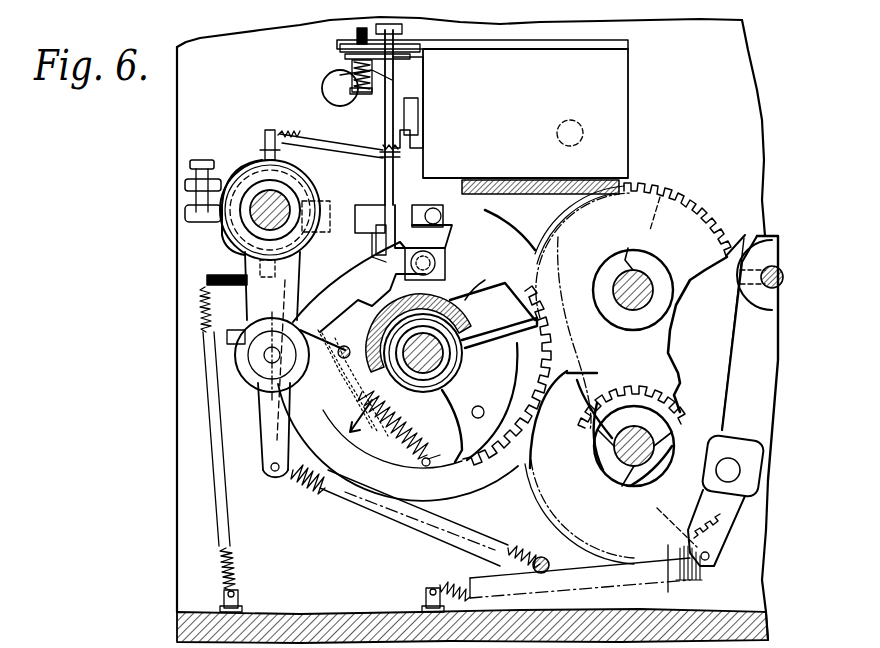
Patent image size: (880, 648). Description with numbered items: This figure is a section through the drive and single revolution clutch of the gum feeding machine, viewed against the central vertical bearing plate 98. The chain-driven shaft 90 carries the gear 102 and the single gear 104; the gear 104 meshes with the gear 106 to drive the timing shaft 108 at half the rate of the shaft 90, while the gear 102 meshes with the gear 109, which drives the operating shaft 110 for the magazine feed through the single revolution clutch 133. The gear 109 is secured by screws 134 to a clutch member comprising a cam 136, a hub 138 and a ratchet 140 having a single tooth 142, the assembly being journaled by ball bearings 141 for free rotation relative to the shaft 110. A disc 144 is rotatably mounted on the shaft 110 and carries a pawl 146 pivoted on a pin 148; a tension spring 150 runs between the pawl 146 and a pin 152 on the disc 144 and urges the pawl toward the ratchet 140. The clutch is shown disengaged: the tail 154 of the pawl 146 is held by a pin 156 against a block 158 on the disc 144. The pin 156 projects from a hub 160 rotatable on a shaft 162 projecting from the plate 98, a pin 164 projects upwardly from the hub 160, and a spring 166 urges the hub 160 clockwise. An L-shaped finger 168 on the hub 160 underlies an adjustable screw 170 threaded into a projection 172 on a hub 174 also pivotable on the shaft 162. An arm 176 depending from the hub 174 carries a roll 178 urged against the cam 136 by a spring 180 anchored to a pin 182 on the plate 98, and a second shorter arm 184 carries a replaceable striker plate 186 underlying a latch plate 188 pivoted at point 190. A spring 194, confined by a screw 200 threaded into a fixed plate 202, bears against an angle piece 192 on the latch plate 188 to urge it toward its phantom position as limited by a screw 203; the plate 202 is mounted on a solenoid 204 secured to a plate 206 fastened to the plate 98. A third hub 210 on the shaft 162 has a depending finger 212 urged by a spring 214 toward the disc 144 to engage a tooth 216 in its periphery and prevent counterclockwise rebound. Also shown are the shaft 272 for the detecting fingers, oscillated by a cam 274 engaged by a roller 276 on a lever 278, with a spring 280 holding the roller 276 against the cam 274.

The shaft 90 is at (625, 470).
The central vertical bearing plate 98 is at (362, 584).
The gear 102 is at (468, 490).
The single gear 104 is at (668, 418).
The gear 106 is at (668, 355).
The timing shaft 108 is at (625, 250).
The gear 109 is at (510, 335).
The operating shaft 110 is at (420, 375).
The single revolution clutch 133 is at (592, 260).
The screws 134 is at (352, 352).
The cam 136 is at (482, 282).
The hub 138 is at (468, 256).
The ratchet 140 is at (456, 262).
The ball bearings 141 is at (462, 375).
The single tooth 142 is at (408, 284).
The disc 144 is at (494, 213).
The pawl 146 is at (365, 282).
The pin 148 is at (452, 232).
The tension spring 150 is at (385, 445).
The pin 152 is at (434, 466).
The tail 154 is at (418, 206).
The pin 156 is at (398, 185).
The block 158 is at (441, 215).
The hub 160 is at (305, 188).
The shaft 162 is at (252, 224).
The pin 164 is at (270, 130).
The spring 166 is at (320, 136).
The L-shaped finger 168 is at (185, 220).
The adjustable screw 170 is at (188, 164).
The projection 172 is at (184, 185).
The hub 174 is at (240, 168).
The arm 176 is at (262, 453).
The roll 178 is at (248, 378).
The spring 180 is at (325, 500).
The pin 182 is at (545, 573).
The second shorter arm 184 is at (358, 206).
The replaceable striker plate 186 is at (388, 256).
The latch plate 188 is at (400, 165).
The pivot point 190 is at (415, 46).
The angle piece 192 is at (352, 62).
The spring 194 is at (390, 78).
The screw 200 is at (355, 34).
The fixed plate 202 is at (482, 47).
The screw 203 is at (350, 68).
The solenoid 204 is at (630, 80).
The plate 206 is at (500, 180).
The third hub 210 is at (238, 254).
The depending finger 212 is at (258, 298).
The spring 214 is at (220, 518).
The tooth 216 is at (353, 383).
The shaft 272 is at (760, 290).
The cam 274 is at (712, 432).
The roller 276 is at (750, 358).
The lever 278 is at (735, 370).
The spring 280 is at (701, 545).